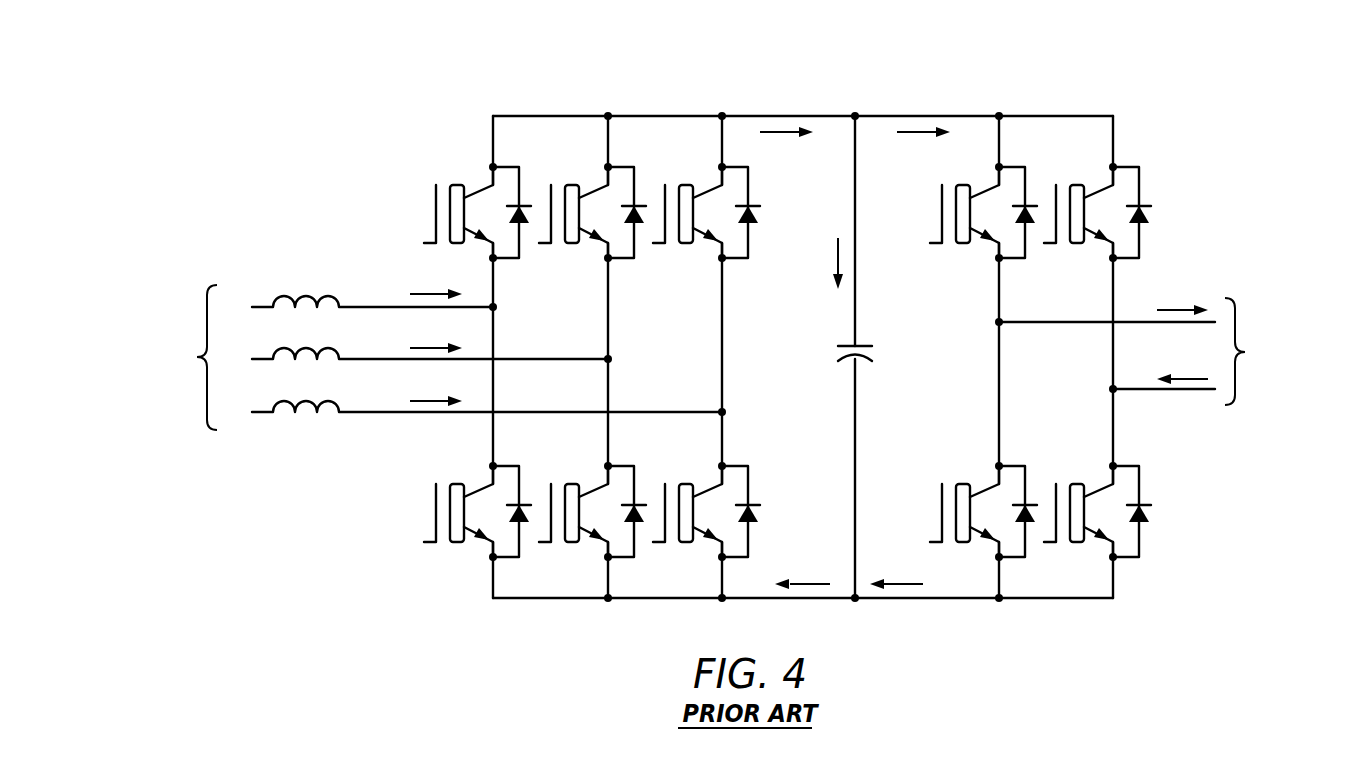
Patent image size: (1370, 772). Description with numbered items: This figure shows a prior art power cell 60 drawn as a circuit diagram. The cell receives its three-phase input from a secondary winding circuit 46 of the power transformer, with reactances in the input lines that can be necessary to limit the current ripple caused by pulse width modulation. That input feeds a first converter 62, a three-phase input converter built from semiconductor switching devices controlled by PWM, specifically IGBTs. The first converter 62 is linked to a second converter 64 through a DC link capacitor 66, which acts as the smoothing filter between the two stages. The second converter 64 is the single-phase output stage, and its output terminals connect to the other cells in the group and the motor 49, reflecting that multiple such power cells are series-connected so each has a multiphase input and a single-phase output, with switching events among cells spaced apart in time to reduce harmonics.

The power cell 60 is at (725, 41).
The first converter 62 is at (750, 96).
The DC link capacitor 66 is at (932, 96).
The second converter 64 is at (932, 96).
The secondary winding circuit 46 is at (193, 280).
The other cells in the group and the motor 49 is at (1352, 260).